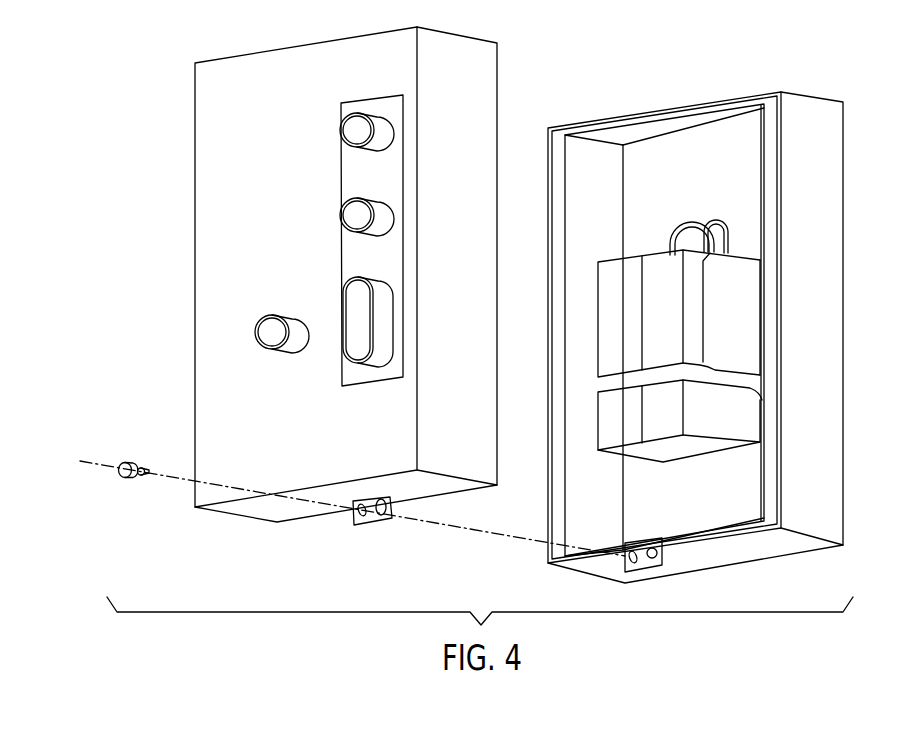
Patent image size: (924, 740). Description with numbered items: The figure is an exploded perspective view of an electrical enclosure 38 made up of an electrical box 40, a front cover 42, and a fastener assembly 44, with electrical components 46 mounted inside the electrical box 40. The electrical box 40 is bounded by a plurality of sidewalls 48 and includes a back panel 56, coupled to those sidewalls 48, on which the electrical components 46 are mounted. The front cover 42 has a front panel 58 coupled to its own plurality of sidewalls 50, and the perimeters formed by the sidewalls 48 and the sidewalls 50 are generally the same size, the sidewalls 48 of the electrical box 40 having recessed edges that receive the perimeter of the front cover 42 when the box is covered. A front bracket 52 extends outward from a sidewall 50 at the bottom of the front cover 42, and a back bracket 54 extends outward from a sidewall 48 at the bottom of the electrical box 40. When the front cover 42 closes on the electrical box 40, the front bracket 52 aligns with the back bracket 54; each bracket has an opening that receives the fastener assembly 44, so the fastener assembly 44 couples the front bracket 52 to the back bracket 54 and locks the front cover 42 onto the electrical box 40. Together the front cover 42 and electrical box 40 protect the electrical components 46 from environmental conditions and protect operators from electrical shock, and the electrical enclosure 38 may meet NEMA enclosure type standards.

The electrical enclosure 38 is at (720, 322).
The electrical box 40 is at (720, 337).
The front cover 42 is at (314, 298).
The fastener assembly 44 is at (141, 465).
The electrical components 46 is at (696, 336).
The sidewalls 48 is at (828, 523).
The sidewalls 50 is at (467, 470).
The front bracket 52 is at (372, 527).
The back bracket 54 is at (645, 571).
The back panel 56 is at (652, 147).
The front panel 58 is at (212, 240).